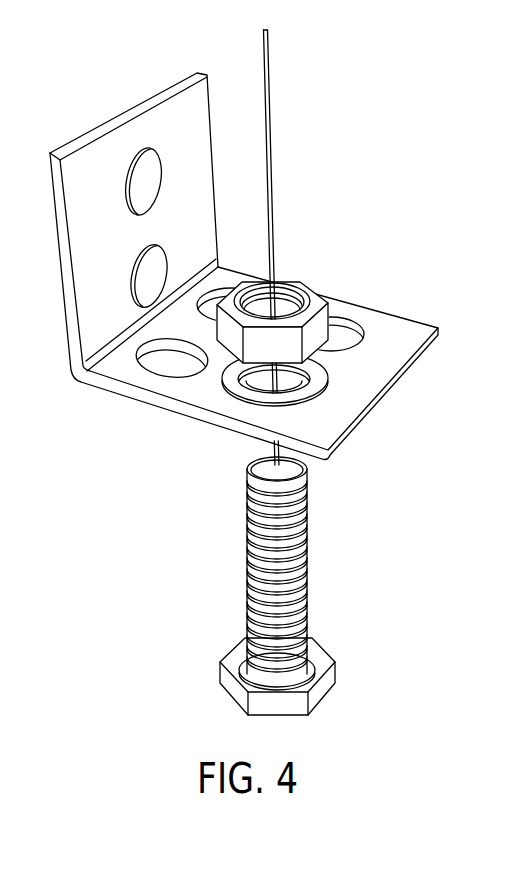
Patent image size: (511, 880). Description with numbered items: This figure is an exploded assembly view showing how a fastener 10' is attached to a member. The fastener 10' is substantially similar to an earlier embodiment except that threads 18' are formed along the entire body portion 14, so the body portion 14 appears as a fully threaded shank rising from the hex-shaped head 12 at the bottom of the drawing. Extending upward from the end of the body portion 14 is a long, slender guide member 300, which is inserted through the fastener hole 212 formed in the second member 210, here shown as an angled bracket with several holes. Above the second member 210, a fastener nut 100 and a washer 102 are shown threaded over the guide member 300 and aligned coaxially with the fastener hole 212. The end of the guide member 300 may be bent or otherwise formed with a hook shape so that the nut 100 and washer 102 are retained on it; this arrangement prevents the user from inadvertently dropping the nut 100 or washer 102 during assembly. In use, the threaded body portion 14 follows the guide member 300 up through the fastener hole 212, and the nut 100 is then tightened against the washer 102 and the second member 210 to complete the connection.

The fastener 10' is at (292, 586).
The bolt head 12 is at (325, 682).
The body portion 14 is at (296, 617).
The threads 18' is at (246, 576).
The fastener nut 100 is at (323, 306).
The washer 102 is at (297, 397).
The second member 210 is at (422, 331).
The fastener hole 212 is at (297, 384).
The guide member 300 is at (275, 178).